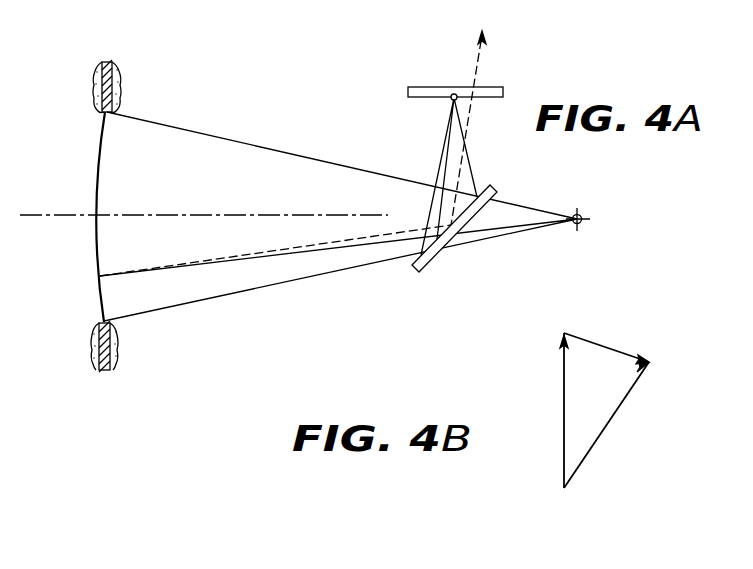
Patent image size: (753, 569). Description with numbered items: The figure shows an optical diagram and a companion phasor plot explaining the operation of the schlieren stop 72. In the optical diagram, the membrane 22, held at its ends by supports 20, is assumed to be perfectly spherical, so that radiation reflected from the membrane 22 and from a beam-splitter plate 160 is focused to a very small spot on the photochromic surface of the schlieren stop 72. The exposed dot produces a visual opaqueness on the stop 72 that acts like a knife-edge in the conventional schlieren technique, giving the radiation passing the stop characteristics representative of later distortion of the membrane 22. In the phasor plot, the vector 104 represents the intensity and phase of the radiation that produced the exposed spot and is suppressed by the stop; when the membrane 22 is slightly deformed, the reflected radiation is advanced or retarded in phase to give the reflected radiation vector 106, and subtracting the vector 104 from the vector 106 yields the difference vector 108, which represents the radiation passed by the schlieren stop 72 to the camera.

In FIG. 4A, the mirror mounting supports 20 is at (108, 62).
In FIG. 4A, the membrane 22 is at (96, 187).
In FIG. 4A, the schlieren stop 72 is at (441, 86).
In FIG. 4A, the beam splitter plate 160 is at (428, 268).
In FIG. 4B, the vector 104 is at (561, 389).
In FIG. 4B, the reflected radiation vector 106 is at (602, 438).
In FIG. 4B, the difference vector 108 is at (602, 345).